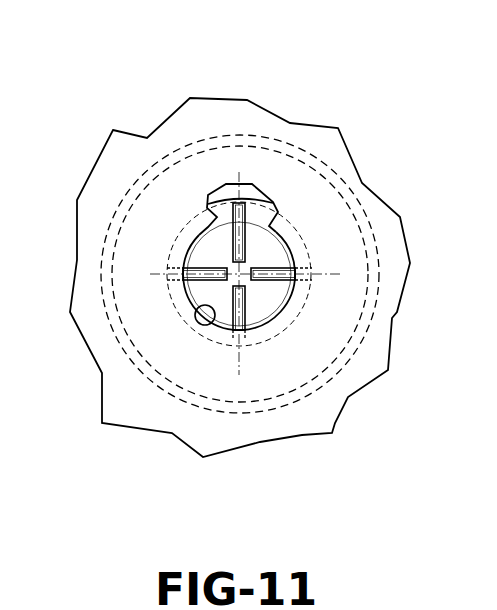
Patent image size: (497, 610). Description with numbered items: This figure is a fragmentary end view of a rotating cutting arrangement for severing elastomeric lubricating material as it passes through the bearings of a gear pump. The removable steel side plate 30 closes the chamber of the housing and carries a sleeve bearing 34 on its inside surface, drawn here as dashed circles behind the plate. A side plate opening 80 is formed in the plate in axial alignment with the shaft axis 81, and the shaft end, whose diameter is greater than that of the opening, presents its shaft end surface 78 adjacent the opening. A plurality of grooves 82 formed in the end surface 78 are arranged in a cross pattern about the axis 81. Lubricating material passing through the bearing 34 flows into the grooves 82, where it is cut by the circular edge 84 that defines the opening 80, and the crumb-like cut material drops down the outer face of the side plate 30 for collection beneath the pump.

The side plate 30 is at (218, 113).
The sleeve bearing 34 is at (175, 160).
The shaft end surface 78 is at (265, 252).
The side plate opening 80 is at (195, 307).
The shaft axis 81 is at (241, 279).
The grooves 82 is at (245, 221).
The circular edge 84 is at (253, 333).